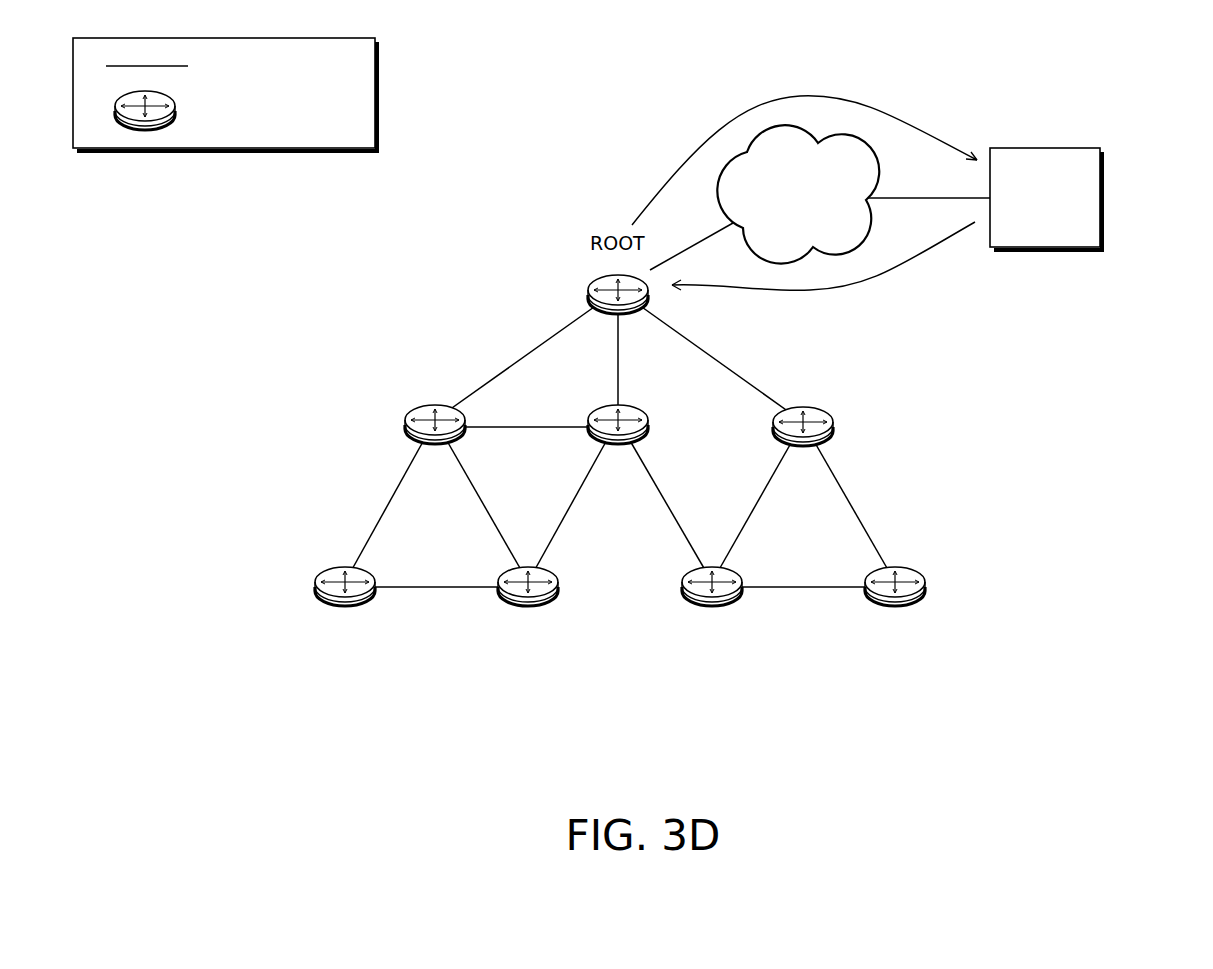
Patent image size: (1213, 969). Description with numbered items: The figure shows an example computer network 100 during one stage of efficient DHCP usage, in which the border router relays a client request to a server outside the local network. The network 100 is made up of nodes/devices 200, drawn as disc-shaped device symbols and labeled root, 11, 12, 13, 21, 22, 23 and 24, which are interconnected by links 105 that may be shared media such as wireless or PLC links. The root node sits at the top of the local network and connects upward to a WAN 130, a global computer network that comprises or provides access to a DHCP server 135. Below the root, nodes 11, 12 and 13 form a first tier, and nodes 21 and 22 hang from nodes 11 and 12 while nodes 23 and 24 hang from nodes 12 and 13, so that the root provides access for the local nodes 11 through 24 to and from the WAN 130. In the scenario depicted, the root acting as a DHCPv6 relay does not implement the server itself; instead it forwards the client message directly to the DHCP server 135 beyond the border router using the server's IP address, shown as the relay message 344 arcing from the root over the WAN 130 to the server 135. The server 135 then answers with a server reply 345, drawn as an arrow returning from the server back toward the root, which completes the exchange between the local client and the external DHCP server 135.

The computer network 100 is at (1128, 78).
The links 105 is at (548, 321).
The nodes/devices 200 is at (223, 110).
The WAN 130 is at (778, 217).
The DHCP server 135 is at (1030, 234).
The relay message 344 is at (719, 126).
The server reply 345 is at (857, 288).
The node 11 is at (435, 445).
The node 12 is at (618, 445).
The node 13 is at (803, 446).
The node 21 is at (345, 605).
The node 22 is at (528, 605).
The node 23 is at (712, 605).
The node 24 is at (895, 605).